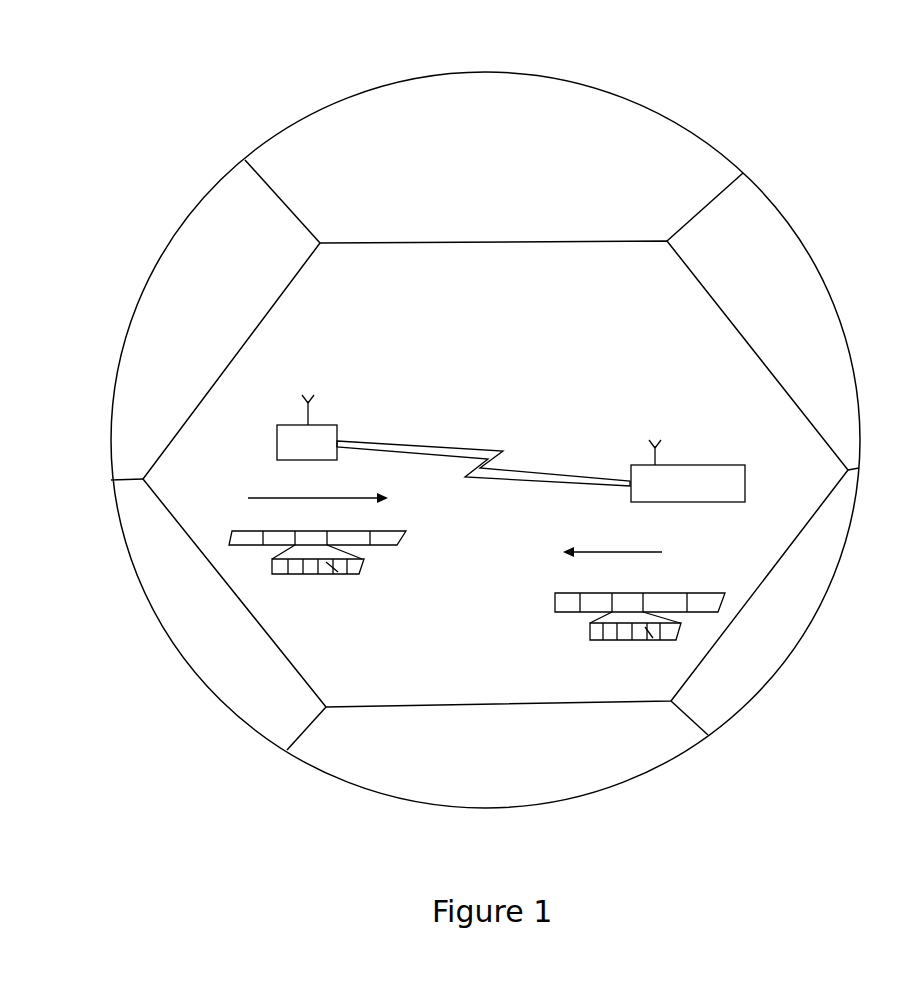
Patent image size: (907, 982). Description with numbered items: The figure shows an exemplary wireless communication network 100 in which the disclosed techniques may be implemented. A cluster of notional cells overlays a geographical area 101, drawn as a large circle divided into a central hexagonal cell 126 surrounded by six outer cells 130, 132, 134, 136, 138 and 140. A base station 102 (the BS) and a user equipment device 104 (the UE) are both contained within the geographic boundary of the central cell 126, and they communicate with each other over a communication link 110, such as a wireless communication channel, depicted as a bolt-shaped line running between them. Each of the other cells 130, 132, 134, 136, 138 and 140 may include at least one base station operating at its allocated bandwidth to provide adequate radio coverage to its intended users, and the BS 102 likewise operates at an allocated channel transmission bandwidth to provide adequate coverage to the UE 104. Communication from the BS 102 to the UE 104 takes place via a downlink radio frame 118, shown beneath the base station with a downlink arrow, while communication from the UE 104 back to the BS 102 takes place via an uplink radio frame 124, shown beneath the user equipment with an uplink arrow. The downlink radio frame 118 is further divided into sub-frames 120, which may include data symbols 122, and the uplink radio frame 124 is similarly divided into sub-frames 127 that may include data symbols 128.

The wireless communication network 100 is at (430, 33).
The geographical area 101 is at (628, 90).
The base station 102 is at (277, 438).
The user equipment device 104 is at (712, 465).
The communication link 110 is at (483, 445).
The downlink radio frame 118 is at (234, 541).
The sub-frame 120 is at (271, 566).
The data symbols 122 is at (329, 575).
The uplink radio frame 124 is at (692, 590).
The cell 126 is at (358, 297).
The sub-frame 127 is at (590, 633).
The data symbols 128 is at (646, 651).
The cell 130 is at (200, 217).
The cell 132 is at (328, 117).
The cell 134 is at (765, 232).
The cell 136 is at (738, 685).
The cell 138 is at (375, 763).
The cell 140 is at (210, 662).